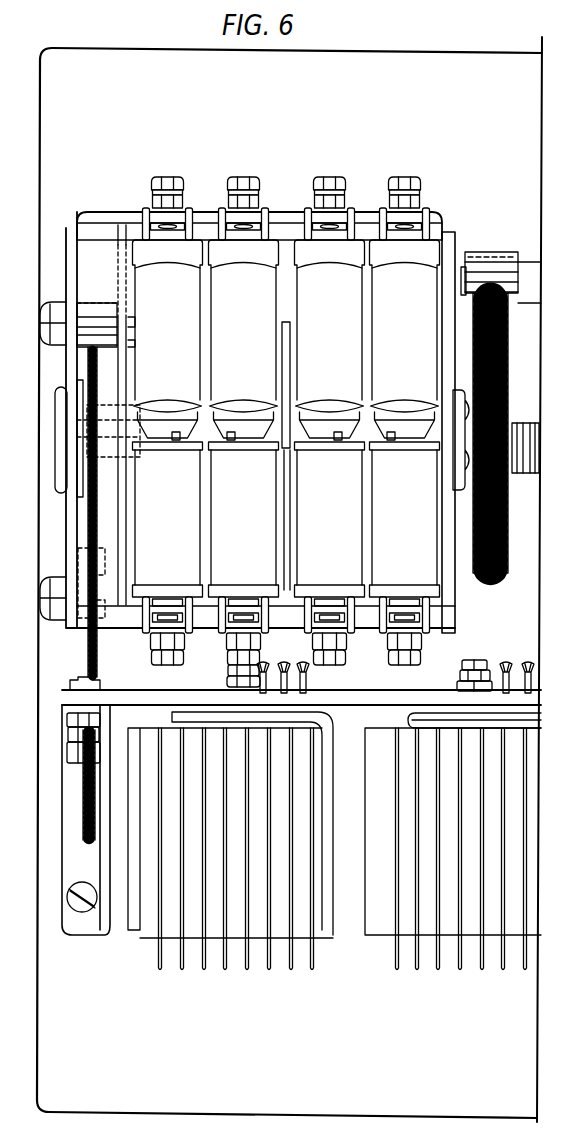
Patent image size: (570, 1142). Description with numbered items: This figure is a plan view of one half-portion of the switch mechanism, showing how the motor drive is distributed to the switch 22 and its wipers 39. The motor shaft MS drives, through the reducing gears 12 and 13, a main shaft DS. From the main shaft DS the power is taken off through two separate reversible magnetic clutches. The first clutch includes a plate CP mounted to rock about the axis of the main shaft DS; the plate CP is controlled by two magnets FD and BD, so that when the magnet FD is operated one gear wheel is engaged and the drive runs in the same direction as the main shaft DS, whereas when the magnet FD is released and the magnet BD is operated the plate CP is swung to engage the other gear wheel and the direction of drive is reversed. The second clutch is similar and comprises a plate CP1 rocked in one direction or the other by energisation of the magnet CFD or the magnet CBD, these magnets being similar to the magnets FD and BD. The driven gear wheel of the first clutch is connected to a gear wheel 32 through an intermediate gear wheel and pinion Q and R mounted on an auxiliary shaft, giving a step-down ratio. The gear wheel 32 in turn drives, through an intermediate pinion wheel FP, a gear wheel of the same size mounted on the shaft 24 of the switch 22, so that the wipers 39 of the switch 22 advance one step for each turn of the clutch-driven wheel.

The magnet FD is at (247, 273).
The magnet CFD is at (392, 295).
The reducing gear 12 is at (472, 252).
The motor shaft MS is at (525, 276).
The reducing gear 13 is at (509, 357).
The main shaft DS is at (513, 420).
The intermediate pinion R is at (100, 326).
The intermediate gear wheel Q is at (120, 365).
The plate CP is at (163, 415).
The plate CP1 is at (398, 417).
The gear wheel 32 is at (85, 514).
The magnet BD is at (233, 517).
The magnet CBD is at (410, 574).
The intermediate pinion wheel FP is at (87, 648).
The shaft 24 is at (67, 740).
The switch 22 is at (131, 946).
The wipers 39 is at (305, 688).